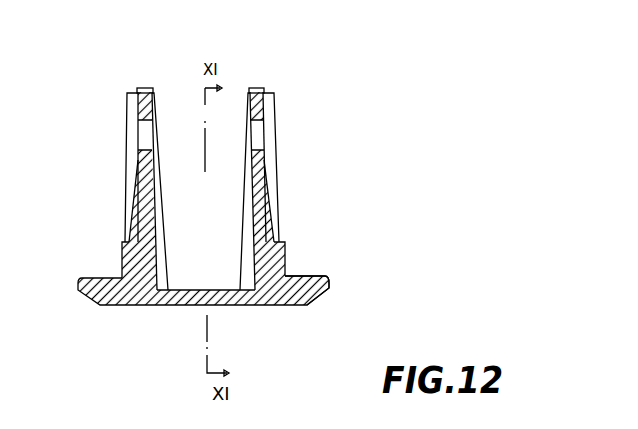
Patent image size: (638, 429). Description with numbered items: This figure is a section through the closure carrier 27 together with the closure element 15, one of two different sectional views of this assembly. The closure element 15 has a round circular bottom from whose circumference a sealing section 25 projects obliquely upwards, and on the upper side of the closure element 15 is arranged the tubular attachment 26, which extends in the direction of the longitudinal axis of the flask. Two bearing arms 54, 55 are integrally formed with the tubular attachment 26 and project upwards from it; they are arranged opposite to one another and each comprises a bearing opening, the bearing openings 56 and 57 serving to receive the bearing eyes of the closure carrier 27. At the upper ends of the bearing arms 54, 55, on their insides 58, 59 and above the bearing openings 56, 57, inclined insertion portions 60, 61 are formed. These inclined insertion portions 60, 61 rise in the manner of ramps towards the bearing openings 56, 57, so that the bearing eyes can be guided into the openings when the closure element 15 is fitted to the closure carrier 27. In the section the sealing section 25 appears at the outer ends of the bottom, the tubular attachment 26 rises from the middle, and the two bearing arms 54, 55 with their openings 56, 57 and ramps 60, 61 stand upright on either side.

The closure element 15 is at (251, 311).
The sealing section 25 is at (327, 287).
The tubular attachment 26 is at (281, 258).
The closure carrier 27 is at (233, 208).
The bearing arm 54 is at (265, 187).
The bearing arm 55 is at (140, 205).
The bearing opening 56 is at (259, 135).
The bearing opening 57 is at (145, 135).
The inside of bearing arm 58 is at (249, 203).
The inside of bearing arm 59 is at (156, 198).
The inclined insertion portion 60 is at (254, 88).
The inclined insertion portion 61 is at (144, 89).